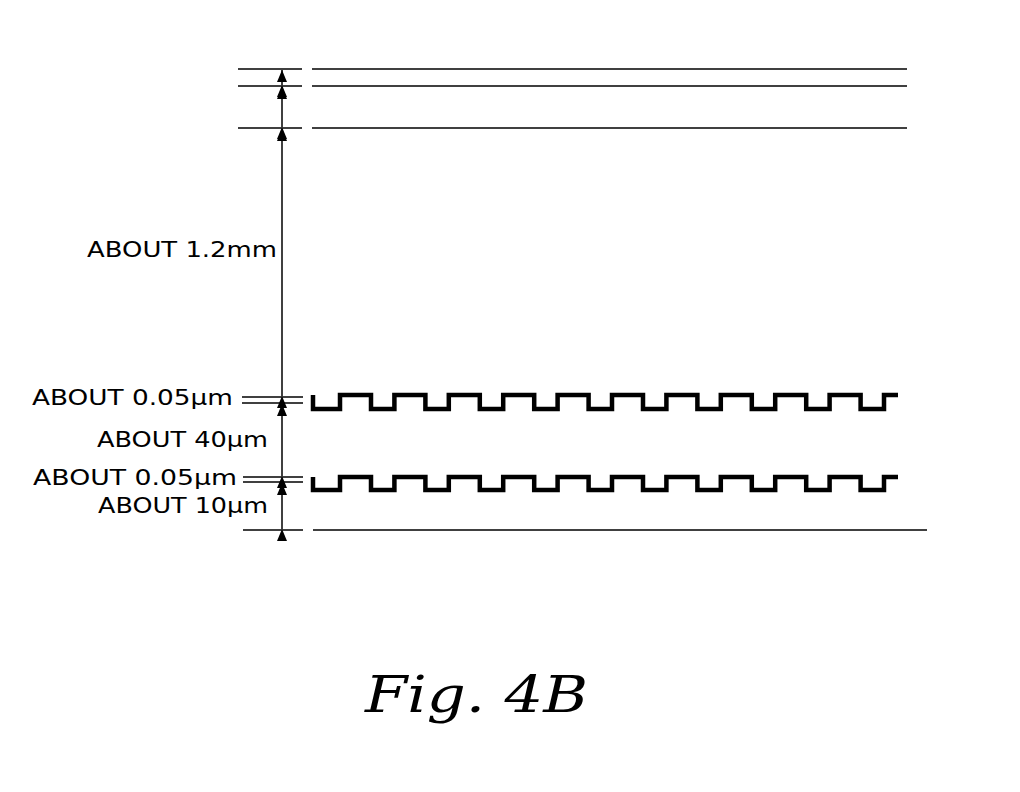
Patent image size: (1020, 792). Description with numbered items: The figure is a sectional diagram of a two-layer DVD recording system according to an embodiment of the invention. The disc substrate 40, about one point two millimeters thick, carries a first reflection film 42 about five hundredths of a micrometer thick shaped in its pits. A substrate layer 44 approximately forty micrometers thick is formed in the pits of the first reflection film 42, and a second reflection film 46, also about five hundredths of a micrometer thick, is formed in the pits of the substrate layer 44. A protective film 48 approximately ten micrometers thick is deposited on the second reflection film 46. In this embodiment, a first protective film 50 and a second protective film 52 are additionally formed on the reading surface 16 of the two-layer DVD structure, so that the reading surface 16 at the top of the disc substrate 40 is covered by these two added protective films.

The reading surface 16 is at (665, 128).
The disc substrate 40 is at (603, 272).
The first reflection film 42 is at (573, 393).
The substrate layer 44 is at (572, 450).
The second reflection film 46 is at (685, 475).
The protective film 48 is at (657, 523).
The first protective film 50 is at (543, 97).
The second protective film 52 is at (736, 78).